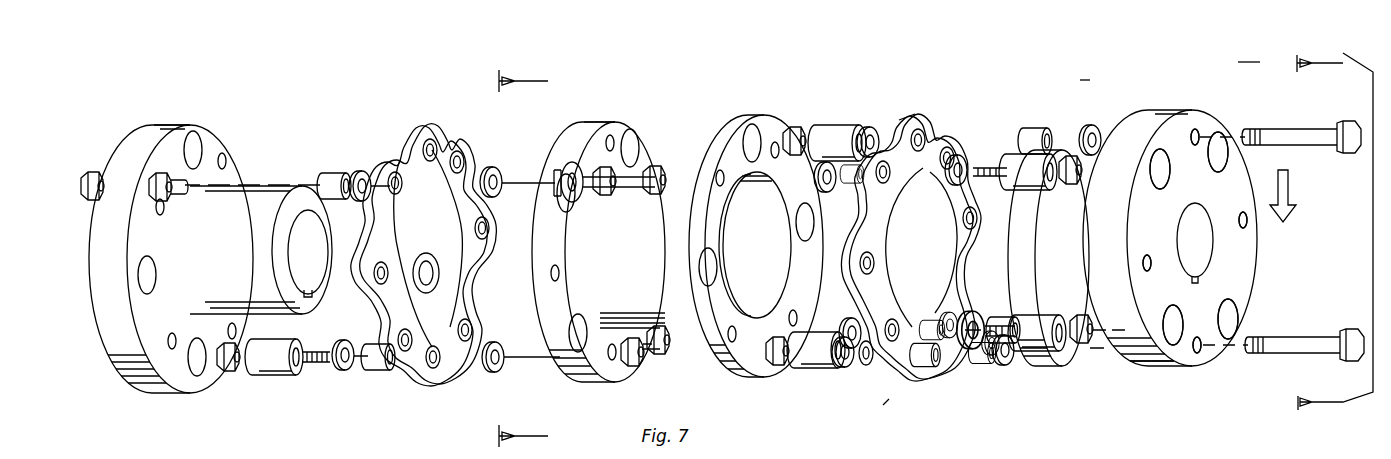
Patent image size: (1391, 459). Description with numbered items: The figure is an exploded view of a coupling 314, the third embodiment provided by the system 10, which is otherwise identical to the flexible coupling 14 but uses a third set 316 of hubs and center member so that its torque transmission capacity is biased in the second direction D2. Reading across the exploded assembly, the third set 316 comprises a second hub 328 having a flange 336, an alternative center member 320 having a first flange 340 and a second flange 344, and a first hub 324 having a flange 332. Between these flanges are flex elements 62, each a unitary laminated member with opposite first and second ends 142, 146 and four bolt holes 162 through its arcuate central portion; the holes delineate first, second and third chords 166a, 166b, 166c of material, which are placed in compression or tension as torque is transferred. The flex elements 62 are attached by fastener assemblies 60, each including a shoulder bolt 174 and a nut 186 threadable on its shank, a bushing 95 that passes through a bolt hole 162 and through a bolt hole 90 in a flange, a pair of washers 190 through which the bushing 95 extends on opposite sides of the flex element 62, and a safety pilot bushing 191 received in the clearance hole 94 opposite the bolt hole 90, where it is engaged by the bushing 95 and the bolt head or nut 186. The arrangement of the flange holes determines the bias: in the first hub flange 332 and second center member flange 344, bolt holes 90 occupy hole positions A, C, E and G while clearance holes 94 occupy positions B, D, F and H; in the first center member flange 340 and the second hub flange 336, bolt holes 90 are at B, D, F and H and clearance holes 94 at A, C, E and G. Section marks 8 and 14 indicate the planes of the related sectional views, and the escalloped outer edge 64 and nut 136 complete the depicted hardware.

The section line 8- 8 is at (1335, 225).
The system 10 is at (1249, 52).
The flexible coupling 14 is at (546, 73).
The fastener assembly 60 is at (883, 415).
The flex element 62 is at (951, 148).
The plate edge 64 is at (910, 116).
The bolt hole 90 is at (225, 155).
The clearance hole 94 is at (196, 140).
The bushing 95 is at (330, 172).
The nut 136 is at (797, 126).
The first end 142 is at (924, 368).
The second end 146 is at (868, 366).
The bolt hole 162 is at (926, 135).
The first chord 166a is at (422, 128).
The second chord 166b is at (468, 252).
The third chord 166c is at (457, 150).
The shoulder bolt 174 is at (102, 182).
The nut 186 is at (610, 195).
The washer 190 is at (360, 170).
The safety pilot bushing 191 is at (268, 374).
The coupling 314 is at (1091, 74).
The third set of hubs and center member 316 is at (300, 111).
The center member 320 is at (608, 272).
The first hub 324 is at (1029, 247).
The second hub 328 is at (212, 250).
The first hub flange 332 is at (1152, 357).
The second hub flange 336 is at (165, 124).
The first center member flange 340 is at (698, 118).
The second center member flange 344 is at (562, 120).
The hole position A is at (1198, 130).
The hole position B is at (1230, 157).
The hole position C is at (1240, 228).
The hole position D is at (1240, 318).
The hole position E is at (1202, 350).
The hole position F is at (1178, 322).
The hole position G is at (1148, 271).
The hole position H is at (1166, 174).
The second direction D2 is at (1290, 195).